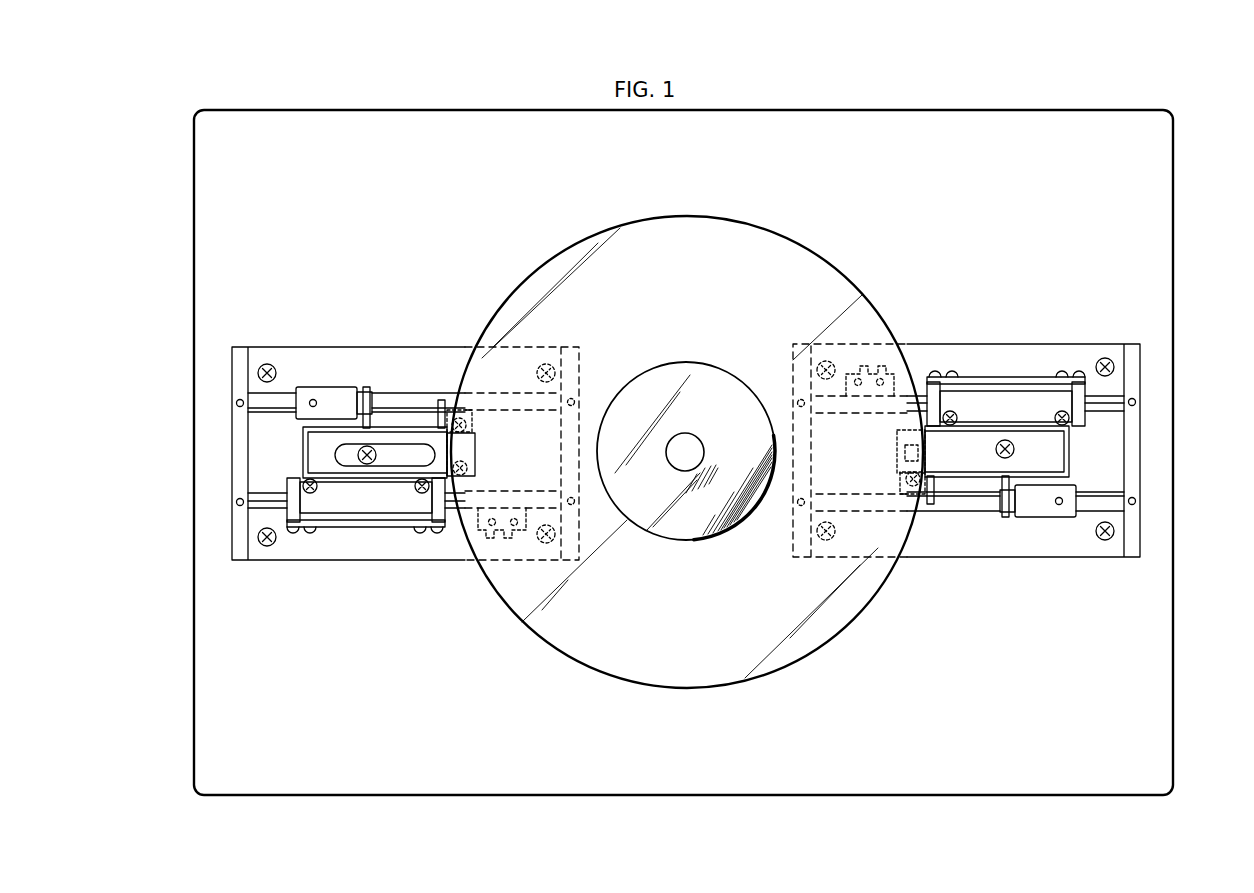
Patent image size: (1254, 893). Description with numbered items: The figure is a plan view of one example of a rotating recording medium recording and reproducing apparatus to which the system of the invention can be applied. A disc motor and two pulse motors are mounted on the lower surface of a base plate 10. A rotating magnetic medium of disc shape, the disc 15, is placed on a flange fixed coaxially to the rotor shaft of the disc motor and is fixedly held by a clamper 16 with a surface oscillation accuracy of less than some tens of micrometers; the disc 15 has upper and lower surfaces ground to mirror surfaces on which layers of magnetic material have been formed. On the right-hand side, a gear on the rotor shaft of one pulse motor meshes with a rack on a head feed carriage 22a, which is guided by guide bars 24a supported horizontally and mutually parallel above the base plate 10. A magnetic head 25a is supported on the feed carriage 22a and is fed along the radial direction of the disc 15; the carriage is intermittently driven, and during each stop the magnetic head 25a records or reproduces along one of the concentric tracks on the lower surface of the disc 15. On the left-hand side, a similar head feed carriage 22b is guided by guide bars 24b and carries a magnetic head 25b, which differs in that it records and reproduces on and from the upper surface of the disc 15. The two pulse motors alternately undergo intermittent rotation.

The base plate 10 is at (1170, 192).
The disc 15 is at (789, 241).
The clamper 16 is at (688, 368).
The head feed carriage 22a is at (1072, 455).
The head feed carriage 22b is at (301, 455).
The guide bars 24a is at (903, 400).
The guide bars 24b is at (397, 400).
The magnetic head 25a is at (893, 456).
The magnetic head 25b is at (462, 455).